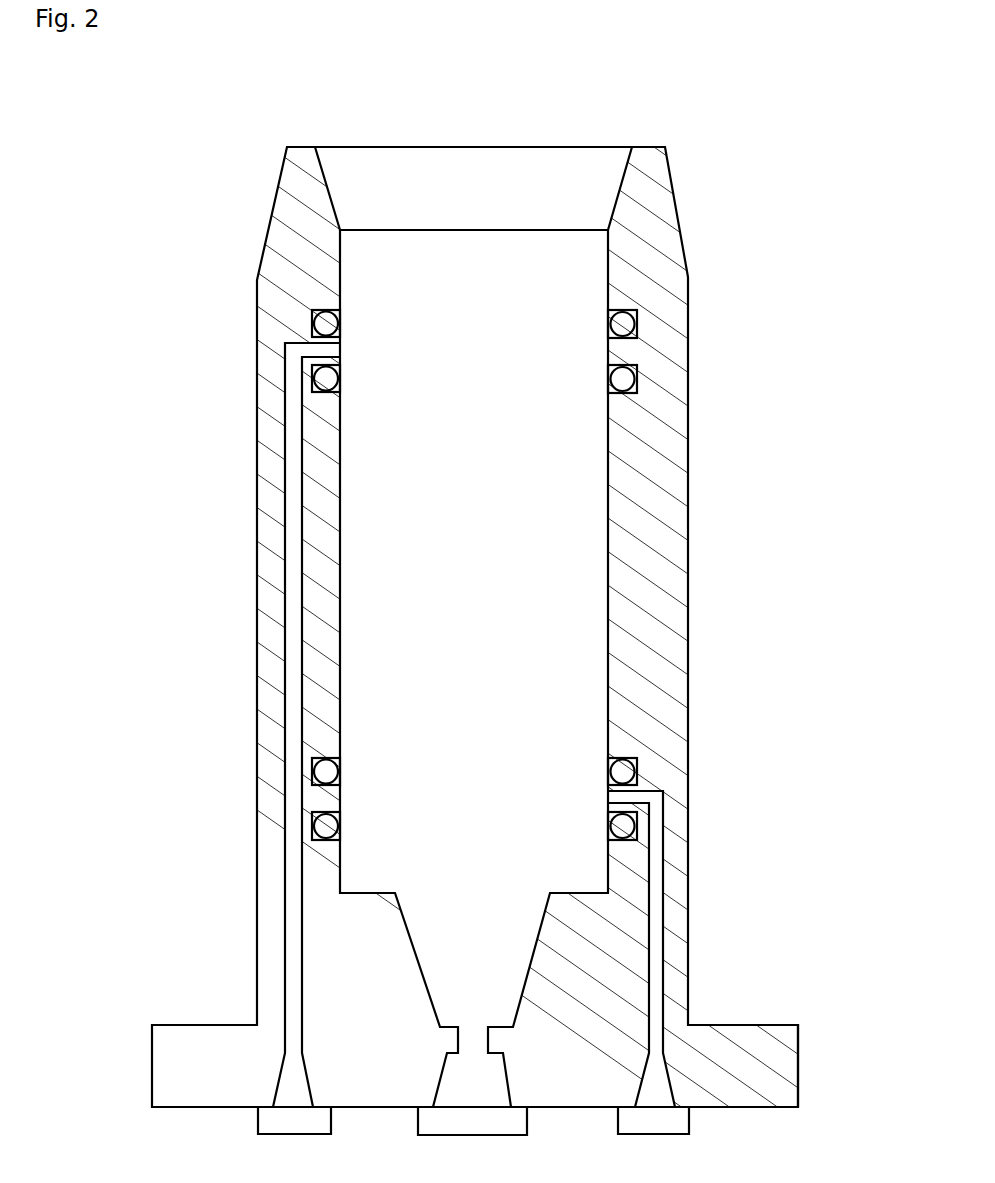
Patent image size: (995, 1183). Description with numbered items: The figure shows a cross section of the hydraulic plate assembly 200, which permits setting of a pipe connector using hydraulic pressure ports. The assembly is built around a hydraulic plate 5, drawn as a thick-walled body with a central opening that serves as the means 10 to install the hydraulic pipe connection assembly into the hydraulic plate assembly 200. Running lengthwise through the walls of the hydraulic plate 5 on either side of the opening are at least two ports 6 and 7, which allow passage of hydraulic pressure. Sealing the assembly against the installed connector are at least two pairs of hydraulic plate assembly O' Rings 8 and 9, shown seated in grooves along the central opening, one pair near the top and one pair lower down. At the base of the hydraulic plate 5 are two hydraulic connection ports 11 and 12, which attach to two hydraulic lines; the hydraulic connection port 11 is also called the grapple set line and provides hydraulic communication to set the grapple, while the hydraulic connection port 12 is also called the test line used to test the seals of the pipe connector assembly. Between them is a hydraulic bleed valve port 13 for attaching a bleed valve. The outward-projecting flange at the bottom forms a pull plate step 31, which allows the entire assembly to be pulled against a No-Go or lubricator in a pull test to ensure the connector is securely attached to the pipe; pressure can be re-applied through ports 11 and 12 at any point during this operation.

The hydraulic plate assembly 200 is at (497, 591).
The hydraulic plate 5 is at (497, 591).
The port 6 is at (264, 345).
The port 7 is at (682, 792).
The hydraulic plate assembly O' Rings 8 is at (654, 369).
The hydraulic plate assembly O' Rings 9 is at (293, 819).
The means to install the hydraulic pipe connection assembly 10 is at (628, 616).
The hydraulic connection port 11 is at (236, 1134).
The hydraulic connection port 12 is at (717, 1130).
The hydraulic bleed valve port 13 is at (454, 1145).
The pull plate step 31 is at (759, 1008).